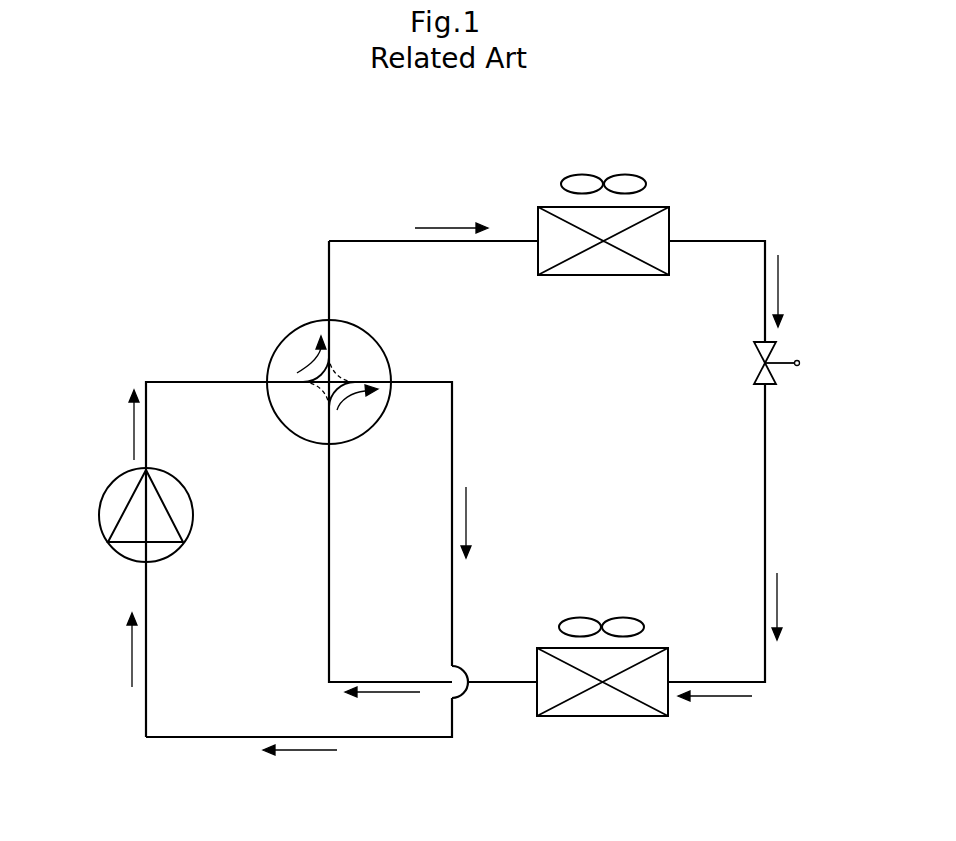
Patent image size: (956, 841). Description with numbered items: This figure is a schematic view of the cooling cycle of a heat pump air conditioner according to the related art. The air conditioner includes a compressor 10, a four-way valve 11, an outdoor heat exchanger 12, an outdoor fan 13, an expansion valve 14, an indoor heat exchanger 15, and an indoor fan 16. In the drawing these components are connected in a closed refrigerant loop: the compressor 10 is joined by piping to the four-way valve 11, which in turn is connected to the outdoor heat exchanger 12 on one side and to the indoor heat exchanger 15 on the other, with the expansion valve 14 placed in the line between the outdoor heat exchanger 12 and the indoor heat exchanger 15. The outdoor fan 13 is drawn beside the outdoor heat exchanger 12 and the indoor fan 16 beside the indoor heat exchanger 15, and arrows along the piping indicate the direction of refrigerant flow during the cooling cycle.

The compressor 10 is at (118, 492).
The four-way valve 11 is at (297, 347).
The outdoor heat exchanger 12 is at (658, 232).
The outdoor fan 13 is at (628, 183).
The expansion valve 14 is at (775, 377).
The indoor heat exchanger 15 is at (607, 705).
The indoor fan 16 is at (627, 625).